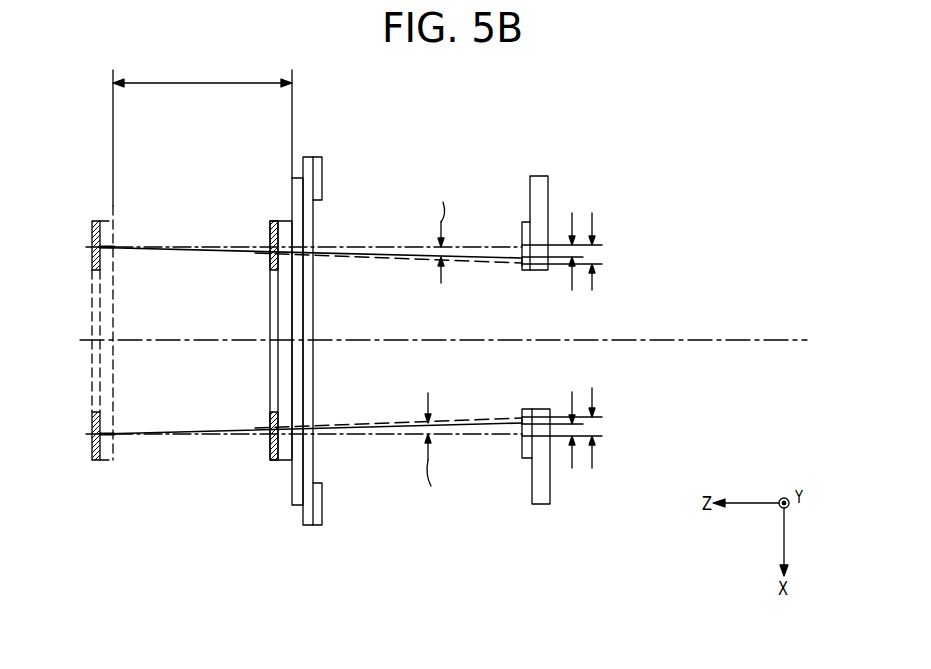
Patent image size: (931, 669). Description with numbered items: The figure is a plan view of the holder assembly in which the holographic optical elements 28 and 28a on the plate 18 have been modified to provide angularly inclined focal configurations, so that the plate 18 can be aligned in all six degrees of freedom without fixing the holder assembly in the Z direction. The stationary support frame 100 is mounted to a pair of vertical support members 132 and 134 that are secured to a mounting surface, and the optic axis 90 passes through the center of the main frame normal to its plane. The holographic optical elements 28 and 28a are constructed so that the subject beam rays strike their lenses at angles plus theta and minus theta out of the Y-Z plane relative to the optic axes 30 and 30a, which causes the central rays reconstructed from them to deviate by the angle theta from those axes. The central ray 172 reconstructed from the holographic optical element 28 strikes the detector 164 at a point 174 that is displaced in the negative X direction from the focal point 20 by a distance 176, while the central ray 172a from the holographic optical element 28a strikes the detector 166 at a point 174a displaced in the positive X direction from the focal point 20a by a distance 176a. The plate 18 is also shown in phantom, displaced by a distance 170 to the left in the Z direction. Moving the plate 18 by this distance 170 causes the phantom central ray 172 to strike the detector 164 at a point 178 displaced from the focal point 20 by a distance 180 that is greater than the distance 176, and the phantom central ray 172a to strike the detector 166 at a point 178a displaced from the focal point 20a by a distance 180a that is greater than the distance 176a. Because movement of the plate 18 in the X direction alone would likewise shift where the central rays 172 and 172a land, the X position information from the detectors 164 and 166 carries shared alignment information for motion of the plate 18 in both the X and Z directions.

The distance 170 is at (199, 82).
The plate 18 is at (114, 291).
The holographic optical element 28a is at (93, 226).
The holographic optical element 28 is at (93, 428).
The stationary support frame 100 is at (291, 177).
The vertical support member 132 is at (318, 168).
The vertical support member 134 is at (318, 517).
The optic axis 90 is at (700, 340).
The optic axis 30a is at (392, 246).
The optic axis 30 is at (405, 440).
The central ray 172a is at (381, 260).
The central ray 172 is at (393, 422).
The point 174a is at (522, 257).
The point 174 is at (521, 425).
The focal point 20a is at (522, 252).
The position detecting means 166 is at (528, 240).
The focal point 20 is at (522, 450).
The position detecting means 164 is at (532, 458).
The distance 176a is at (574, 242).
The distance 180a is at (592, 253).
The distance 176 is at (573, 426).
The distance 180 is at (592, 426).
The point 178a is at (522, 265).
The point 178 is at (521, 421).